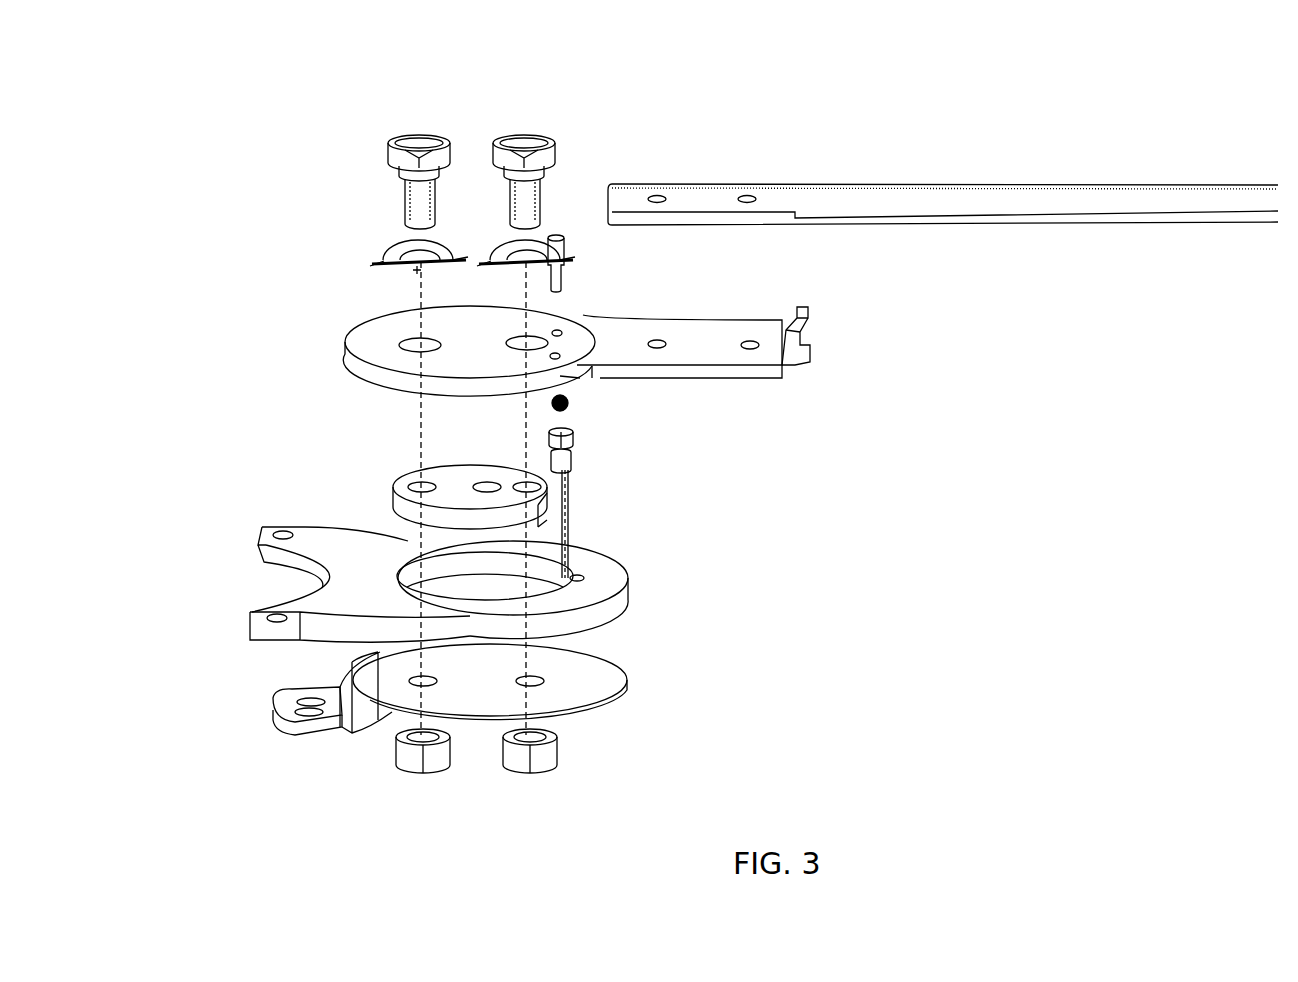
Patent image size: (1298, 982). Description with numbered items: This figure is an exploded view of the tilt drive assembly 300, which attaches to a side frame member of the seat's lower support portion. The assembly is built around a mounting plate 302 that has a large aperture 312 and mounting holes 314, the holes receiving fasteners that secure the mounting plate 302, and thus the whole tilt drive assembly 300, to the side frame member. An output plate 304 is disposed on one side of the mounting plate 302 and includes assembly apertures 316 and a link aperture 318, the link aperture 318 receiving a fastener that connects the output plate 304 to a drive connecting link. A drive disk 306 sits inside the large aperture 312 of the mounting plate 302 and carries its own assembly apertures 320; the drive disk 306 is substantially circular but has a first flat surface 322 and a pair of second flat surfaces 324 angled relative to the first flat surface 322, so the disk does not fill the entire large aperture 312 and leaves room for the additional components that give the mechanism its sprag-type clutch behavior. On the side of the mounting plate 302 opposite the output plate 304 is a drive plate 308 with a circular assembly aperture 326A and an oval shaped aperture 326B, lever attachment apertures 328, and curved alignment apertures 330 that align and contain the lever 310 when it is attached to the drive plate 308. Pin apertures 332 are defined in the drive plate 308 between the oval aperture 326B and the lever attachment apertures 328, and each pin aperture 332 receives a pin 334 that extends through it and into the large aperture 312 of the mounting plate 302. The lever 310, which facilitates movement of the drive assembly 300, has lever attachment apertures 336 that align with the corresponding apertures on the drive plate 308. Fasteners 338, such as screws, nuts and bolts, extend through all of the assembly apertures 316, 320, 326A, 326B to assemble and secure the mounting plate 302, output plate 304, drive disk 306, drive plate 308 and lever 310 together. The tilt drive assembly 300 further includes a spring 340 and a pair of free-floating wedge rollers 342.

The tilt drive assembly 300 is at (243, 62).
The mounting plate 302 is at (622, 555).
The output plate 304 is at (625, 665).
The drive disk 306 is at (420, 472).
The drive plate 308 is at (352, 333).
The lever 310 is at (1005, 185).
The large aperture 312 is at (583, 582).
The mounting holes 314 is at (283, 535).
The assembly apertures 316 is at (535, 686).
The link aperture 318 is at (305, 700).
The assembly apertures 320 is at (523, 480).
The first flat surface 322 is at (569, 492).
The second flat surfaces 324 is at (543, 470).
The circular assembly aperture 326A is at (407, 347).
The oval shaped aperture 326B is at (553, 335).
The lever attachment apertures 328 is at (662, 344).
The curved alignment apertures 330 is at (805, 318).
The pin apertures 332 is at (554, 360).
The pin 334 is at (568, 276).
The lever attachment apertures 336 is at (662, 197).
The fasteners 338 is at (400, 137).
The spring 340 is at (567, 405).
The free-floating wedge rollers 342 is at (571, 437).